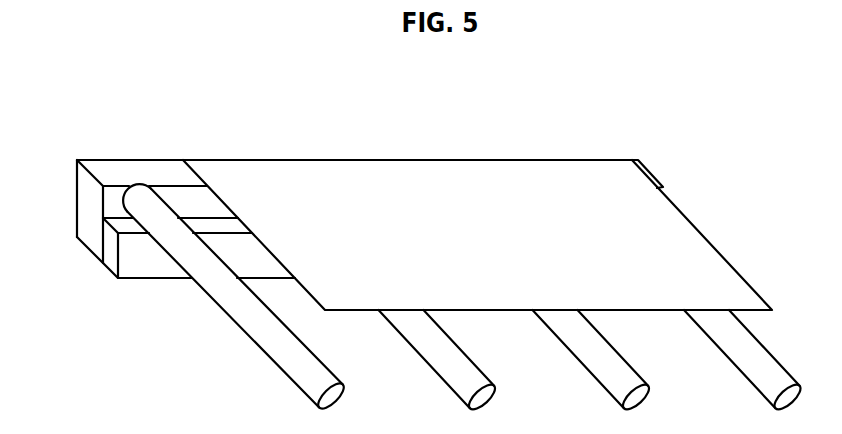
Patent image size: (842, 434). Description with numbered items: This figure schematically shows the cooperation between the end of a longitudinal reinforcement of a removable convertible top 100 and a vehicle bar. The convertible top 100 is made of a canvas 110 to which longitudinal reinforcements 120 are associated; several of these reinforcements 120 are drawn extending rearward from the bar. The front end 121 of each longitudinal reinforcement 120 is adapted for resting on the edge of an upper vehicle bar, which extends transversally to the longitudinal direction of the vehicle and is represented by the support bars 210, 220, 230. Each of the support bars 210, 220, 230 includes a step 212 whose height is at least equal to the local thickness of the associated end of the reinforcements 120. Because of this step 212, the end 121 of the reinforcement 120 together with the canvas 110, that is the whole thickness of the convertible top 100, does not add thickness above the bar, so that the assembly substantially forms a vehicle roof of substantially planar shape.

The convertible top 100 is at (430, 120).
The canvas 110 is at (507, 187).
The longitudinal reinforcements 120 is at (306, 372).
The front end 121 is at (143, 255).
The support bar 210 is at (135, 157).
The support bar 220 is at (157, 211).
The support bar 230 is at (157, 211).
The step 212 is at (125, 220).